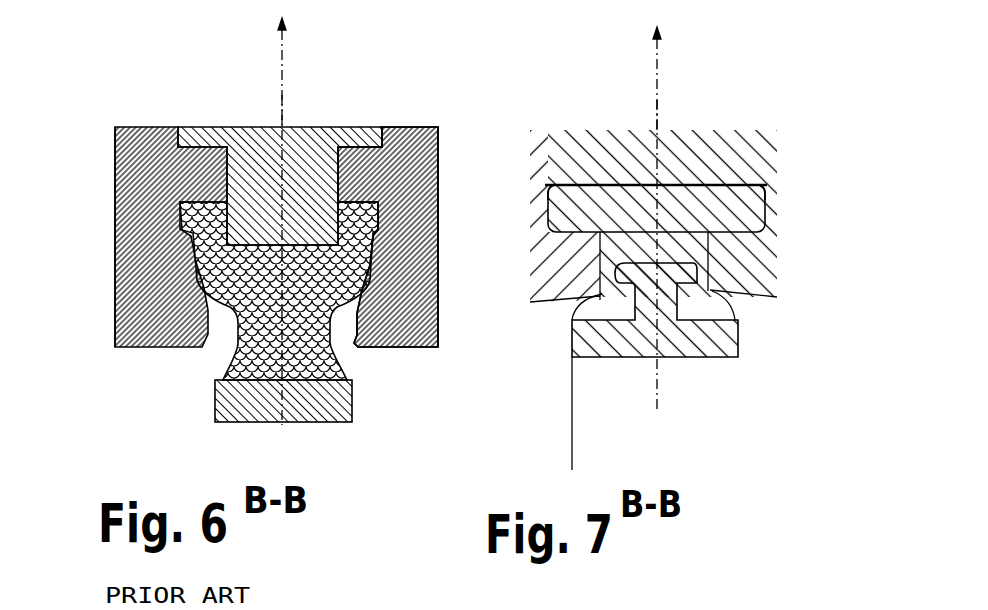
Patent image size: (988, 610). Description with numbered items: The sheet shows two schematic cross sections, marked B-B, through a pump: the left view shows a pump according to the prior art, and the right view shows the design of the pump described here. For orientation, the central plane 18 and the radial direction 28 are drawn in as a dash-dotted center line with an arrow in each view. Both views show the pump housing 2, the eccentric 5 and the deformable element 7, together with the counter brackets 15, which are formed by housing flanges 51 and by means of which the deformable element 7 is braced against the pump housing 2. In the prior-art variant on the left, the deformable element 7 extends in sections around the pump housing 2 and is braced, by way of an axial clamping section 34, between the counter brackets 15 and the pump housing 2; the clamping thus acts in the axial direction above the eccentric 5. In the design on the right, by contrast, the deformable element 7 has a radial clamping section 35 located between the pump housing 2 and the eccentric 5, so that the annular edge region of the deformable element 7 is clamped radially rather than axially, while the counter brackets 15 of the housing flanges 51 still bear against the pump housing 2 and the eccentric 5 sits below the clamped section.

In FIG. 6, the pump housing 2 is at (323, 135).
In FIG. 7, the pump housing 2 is at (745, 137).
In FIG. 6, the eccentric 5 is at (320, 407).
In FIG. 7, the eccentric 5 is at (700, 347).
In FIG. 6, the deformable element 7 is at (428, 280).
In FIG. 7, the deformable element 7 is at (745, 213).
In FIG. 6, the counter brackets 15 is at (116, 182).
In FIG. 7, the counter brackets 15 is at (545, 262).
In FIG. 6, the central plane 18 is at (282, 108).
In FIG. 7, the central plane 18 is at (657, 118).
In FIG. 6, the radial direction 28 is at (282, 62).
In FIG. 7, the radial direction 28 is at (657, 58).
In FIG. 6, the axial clamping section 34 is at (202, 220).
In FIG. 7, the radial clamping section 35 is at (570, 184).
In FIG. 6, the housing flanges 51 is at (115, 217).
In FIG. 7, the housing flanges 51 is at (545, 190).